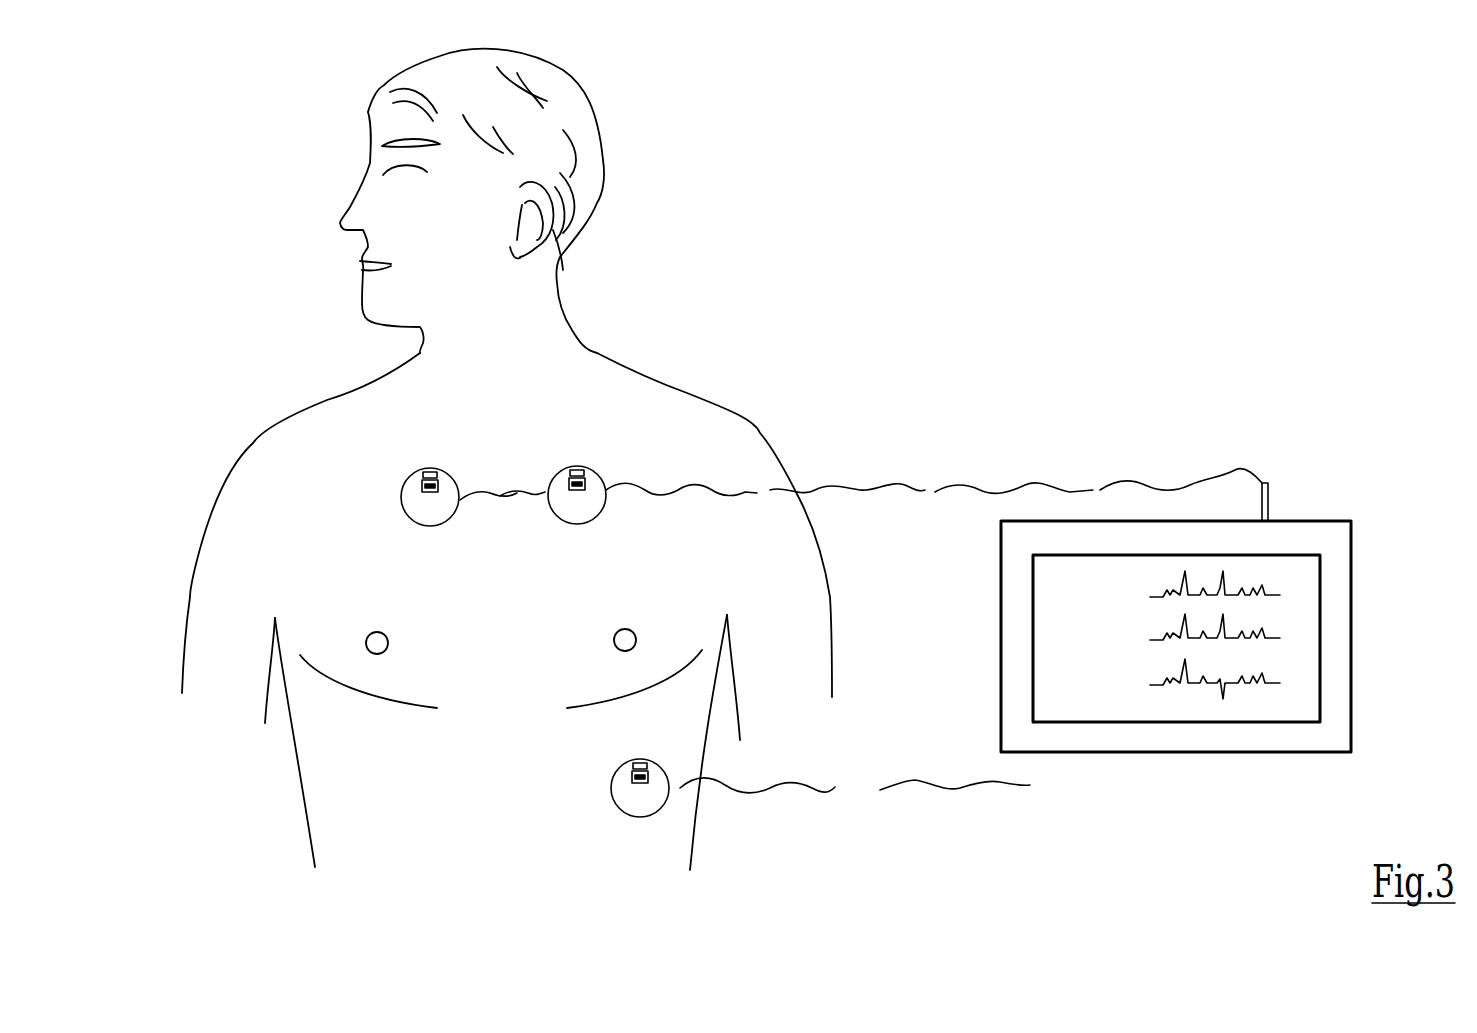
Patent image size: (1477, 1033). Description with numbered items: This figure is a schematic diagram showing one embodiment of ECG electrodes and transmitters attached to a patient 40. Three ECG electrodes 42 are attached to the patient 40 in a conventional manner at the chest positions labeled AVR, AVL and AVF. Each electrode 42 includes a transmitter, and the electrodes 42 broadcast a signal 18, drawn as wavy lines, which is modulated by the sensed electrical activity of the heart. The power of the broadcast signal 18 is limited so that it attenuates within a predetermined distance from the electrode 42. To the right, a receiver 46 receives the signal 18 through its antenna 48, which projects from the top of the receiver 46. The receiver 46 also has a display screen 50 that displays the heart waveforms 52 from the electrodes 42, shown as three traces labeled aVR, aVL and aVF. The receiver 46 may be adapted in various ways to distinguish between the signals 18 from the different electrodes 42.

The signal 18 is at (478, 490).
The patient 40 is at (577, 87).
The ECG electrode 42 is at (416, 482).
The receiver 46 is at (1353, 558).
The antenna 48 is at (1268, 483).
The display screen 50 is at (1063, 685).
The heart waveform 52 is at (1280, 638).